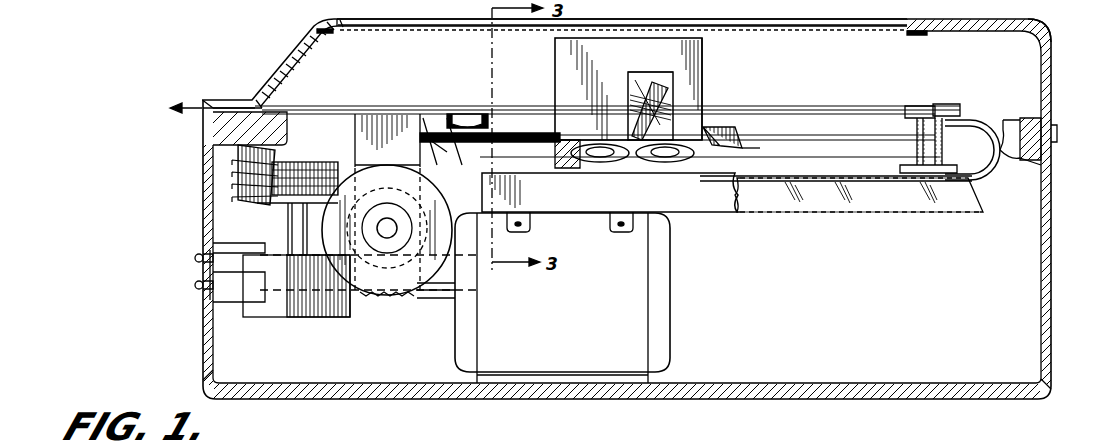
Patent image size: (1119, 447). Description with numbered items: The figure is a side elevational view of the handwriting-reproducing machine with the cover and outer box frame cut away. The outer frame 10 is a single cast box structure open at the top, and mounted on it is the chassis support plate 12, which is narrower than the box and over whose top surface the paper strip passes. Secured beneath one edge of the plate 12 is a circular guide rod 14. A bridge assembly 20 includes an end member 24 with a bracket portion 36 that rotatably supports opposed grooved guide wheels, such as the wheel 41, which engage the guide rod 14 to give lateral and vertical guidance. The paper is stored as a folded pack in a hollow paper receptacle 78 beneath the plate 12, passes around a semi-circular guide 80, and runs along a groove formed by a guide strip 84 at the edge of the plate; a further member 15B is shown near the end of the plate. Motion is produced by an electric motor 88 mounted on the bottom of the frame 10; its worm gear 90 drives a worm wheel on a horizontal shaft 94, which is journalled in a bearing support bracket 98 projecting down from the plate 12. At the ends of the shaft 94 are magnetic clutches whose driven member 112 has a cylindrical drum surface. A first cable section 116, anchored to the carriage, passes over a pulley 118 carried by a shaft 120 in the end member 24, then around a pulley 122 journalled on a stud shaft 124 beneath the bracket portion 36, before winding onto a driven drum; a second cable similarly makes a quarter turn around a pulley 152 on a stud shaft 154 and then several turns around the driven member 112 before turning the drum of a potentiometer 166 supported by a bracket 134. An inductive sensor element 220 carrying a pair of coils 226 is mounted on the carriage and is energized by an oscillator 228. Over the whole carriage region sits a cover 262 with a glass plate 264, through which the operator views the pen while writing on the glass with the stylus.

The outer frame 10 is at (1052, 285).
The chassis support plate 12 is at (944, 118).
The guide rod 14 is at (830, 142).
The plate end block 15B is at (936, 107).
The bridge assembly 20 is at (703, 56).
The end member 24 is at (575, 55).
The bracket portion 36 is at (746, 150).
The grooved guide wheel 41 is at (733, 128).
The paper receptacle 78 is at (952, 202).
The semi-circular guide 80 is at (995, 158).
The guide strip 84 is at (912, 105).
The electric motor 88 is at (672, 300).
The worm gear 90 is at (405, 297).
The horizontal shaft 94 is at (390, 226).
The bearing support bracket 98 is at (355, 133).
The driven member 112 is at (387, 172).
The first cable section 116 is at (518, 165).
The pulley 118 is at (650, 100).
The shaft 120 is at (640, 80).
The pulley 122 is at (580, 162).
The stud shaft 124 is at (601, 158).
The bracket 134 is at (225, 292).
The pulley 152 is at (642, 160).
The stud shaft 154 is at (670, 158).
The potentiometer 166 is at (326, 305).
The sensor element 220 is at (452, 112).
The pair of coils 226 is at (450, 153).
The oscillator 228 is at (1040, 163).
The cover 262 is at (1052, 52).
The glass plate 264 is at (885, 33).